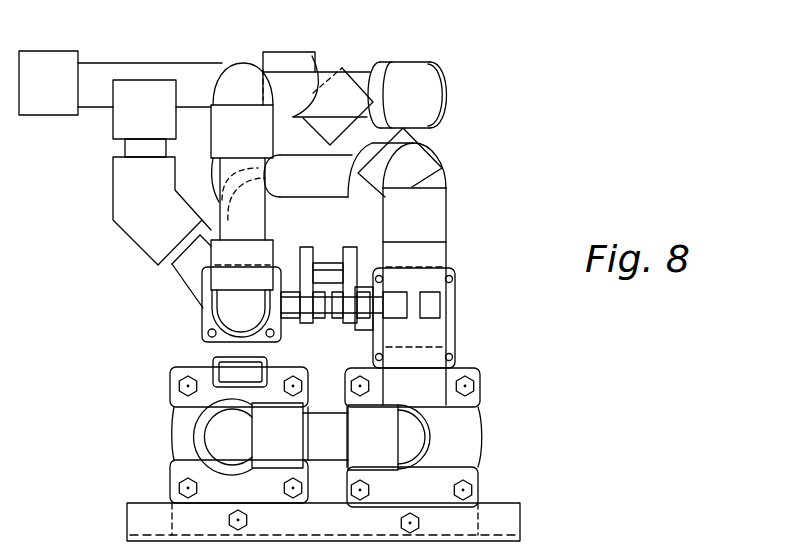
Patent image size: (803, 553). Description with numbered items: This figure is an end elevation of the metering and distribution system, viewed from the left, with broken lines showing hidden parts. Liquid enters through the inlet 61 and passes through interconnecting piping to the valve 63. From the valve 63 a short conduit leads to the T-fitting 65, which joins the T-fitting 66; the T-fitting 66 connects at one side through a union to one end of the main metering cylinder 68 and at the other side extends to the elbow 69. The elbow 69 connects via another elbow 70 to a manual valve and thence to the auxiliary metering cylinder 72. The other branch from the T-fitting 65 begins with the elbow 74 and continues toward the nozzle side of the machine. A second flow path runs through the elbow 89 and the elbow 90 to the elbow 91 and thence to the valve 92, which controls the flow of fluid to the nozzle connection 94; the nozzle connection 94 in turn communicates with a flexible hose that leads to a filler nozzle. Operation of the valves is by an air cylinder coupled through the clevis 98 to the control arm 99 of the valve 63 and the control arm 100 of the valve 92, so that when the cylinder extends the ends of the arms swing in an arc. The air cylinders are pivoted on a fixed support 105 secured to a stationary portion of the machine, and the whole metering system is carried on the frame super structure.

The inlet 61 is at (53, 60).
The nozzle connection 94 is at (118, 128).
The elbow 90 is at (238, 72).
The elbow 91 is at (245, 249).
The valve 92 is at (203, 319).
The control arm 100 is at (297, 252).
The clevis 98 is at (326, 263).
The control arm 99 is at (357, 253).
The elbow 89 is at (400, 65).
The elbow 74 is at (430, 212).
The valve 63 is at (452, 313).
The T-fitting 65 is at (432, 303).
The T-fitting 66 is at (432, 387).
The main metering cylinder 68 is at (479, 432).
The elbow 69 is at (425, 440).
The auxiliary metering cylinder 72 is at (177, 434).
The elbow 70 is at (220, 439).
The fixed support 105 is at (140, 550).